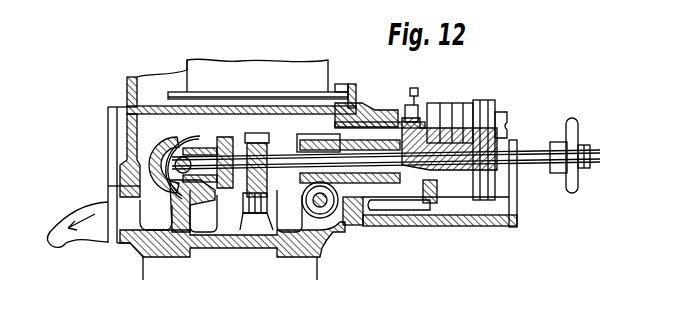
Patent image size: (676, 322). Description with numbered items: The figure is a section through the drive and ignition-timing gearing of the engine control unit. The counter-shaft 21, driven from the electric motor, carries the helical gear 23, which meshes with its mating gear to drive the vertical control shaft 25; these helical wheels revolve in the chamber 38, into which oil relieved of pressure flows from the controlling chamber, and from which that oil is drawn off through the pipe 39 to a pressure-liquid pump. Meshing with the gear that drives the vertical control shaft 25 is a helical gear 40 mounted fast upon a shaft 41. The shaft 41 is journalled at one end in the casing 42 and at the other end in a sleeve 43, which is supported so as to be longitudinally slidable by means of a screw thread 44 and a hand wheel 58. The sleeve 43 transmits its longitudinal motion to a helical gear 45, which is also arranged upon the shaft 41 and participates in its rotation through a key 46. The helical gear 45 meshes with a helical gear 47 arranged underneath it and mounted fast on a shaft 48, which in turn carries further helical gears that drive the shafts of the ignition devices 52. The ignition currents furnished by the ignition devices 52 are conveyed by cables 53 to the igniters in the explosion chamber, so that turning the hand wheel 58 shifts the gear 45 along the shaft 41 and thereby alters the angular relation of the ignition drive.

The counter-shaft 21 is at (173, 192).
The helical gear 23 is at (178, 142).
The vertical control shaft 25 is at (248, 204).
The chamber 38 is at (353, 112).
The pipe 39 is at (78, 212).
The helical gear 40 is at (255, 147).
The shaft 41 is at (277, 172).
The casing 42 is at (197, 233).
The sleeve 43 is at (445, 150).
The screw thread 44 is at (448, 198).
The helical gear 45 is at (325, 141).
The key 46 is at (268, 162).
The helical gear 47 is at (342, 223).
The shaft 48 is at (326, 244).
The ignition devices 52 is at (471, 118).
The cables 53 is at (503, 120).
The hand wheel 58 is at (568, 131).